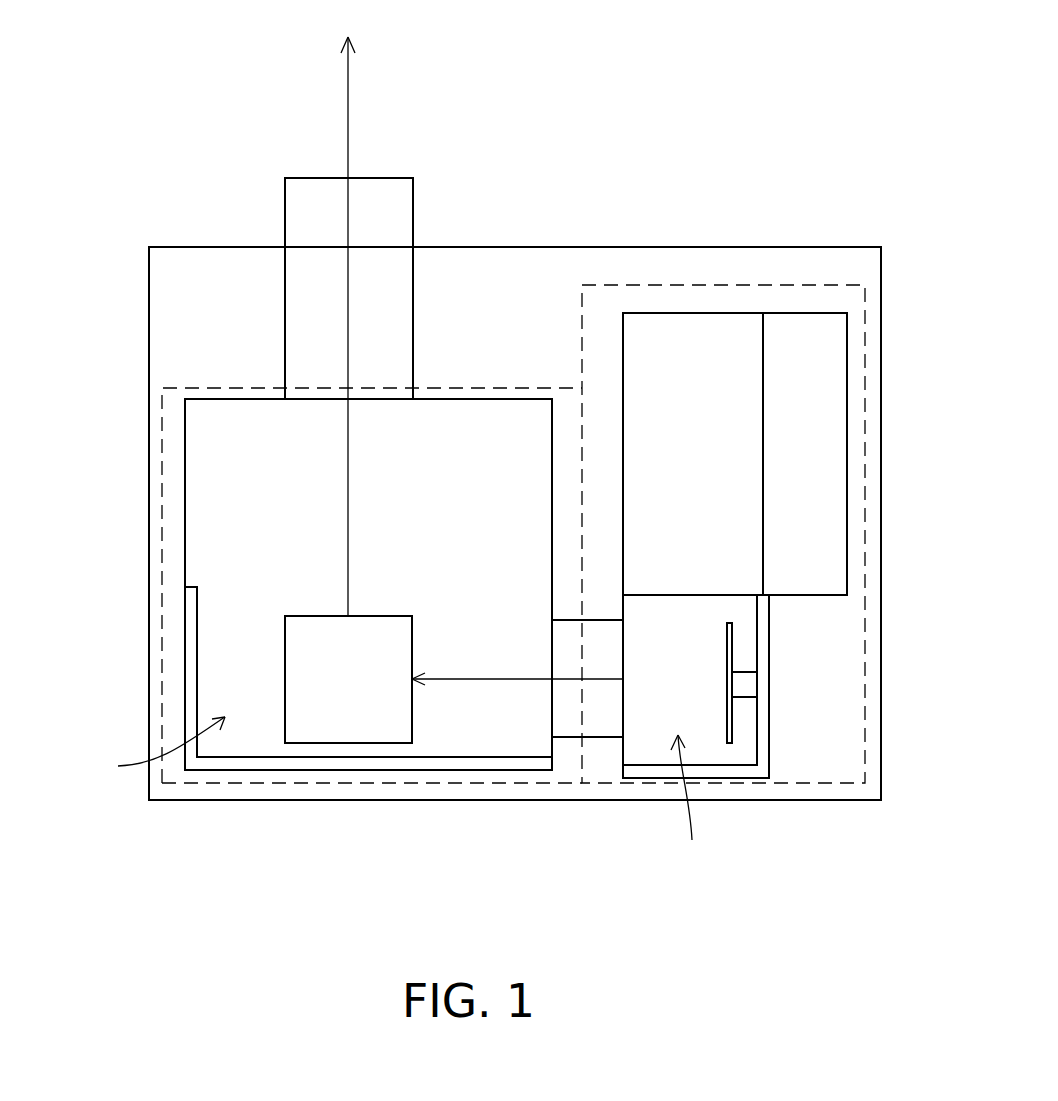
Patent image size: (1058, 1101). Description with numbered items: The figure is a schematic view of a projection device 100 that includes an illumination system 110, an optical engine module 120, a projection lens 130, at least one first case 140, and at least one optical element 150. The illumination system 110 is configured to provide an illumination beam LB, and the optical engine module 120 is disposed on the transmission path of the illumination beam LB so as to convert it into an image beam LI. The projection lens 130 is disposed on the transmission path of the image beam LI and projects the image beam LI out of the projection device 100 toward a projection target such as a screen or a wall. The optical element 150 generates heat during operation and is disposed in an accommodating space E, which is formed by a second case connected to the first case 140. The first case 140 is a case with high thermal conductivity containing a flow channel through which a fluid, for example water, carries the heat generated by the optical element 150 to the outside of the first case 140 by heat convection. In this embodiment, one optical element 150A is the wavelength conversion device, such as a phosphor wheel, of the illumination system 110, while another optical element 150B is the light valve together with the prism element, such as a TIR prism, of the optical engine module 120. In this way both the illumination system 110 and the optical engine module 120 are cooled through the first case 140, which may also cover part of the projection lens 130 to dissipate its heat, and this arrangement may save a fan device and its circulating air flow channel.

The projection device 100 is at (870, 72).
The illumination system 110 is at (865, 327).
The optical engine module 120 is at (162, 555).
The projection lens 130 is at (402, 209).
The first case 140 is at (246, 763).
The optical element 150 is at (622, 746).
The optical element 150A is at (745, 686).
The optical element 150B is at (350, 735).
The image beam LI is at (348, 470).
The illumination beam LB is at (483, 679).
The accommodating space E is at (400, 798).